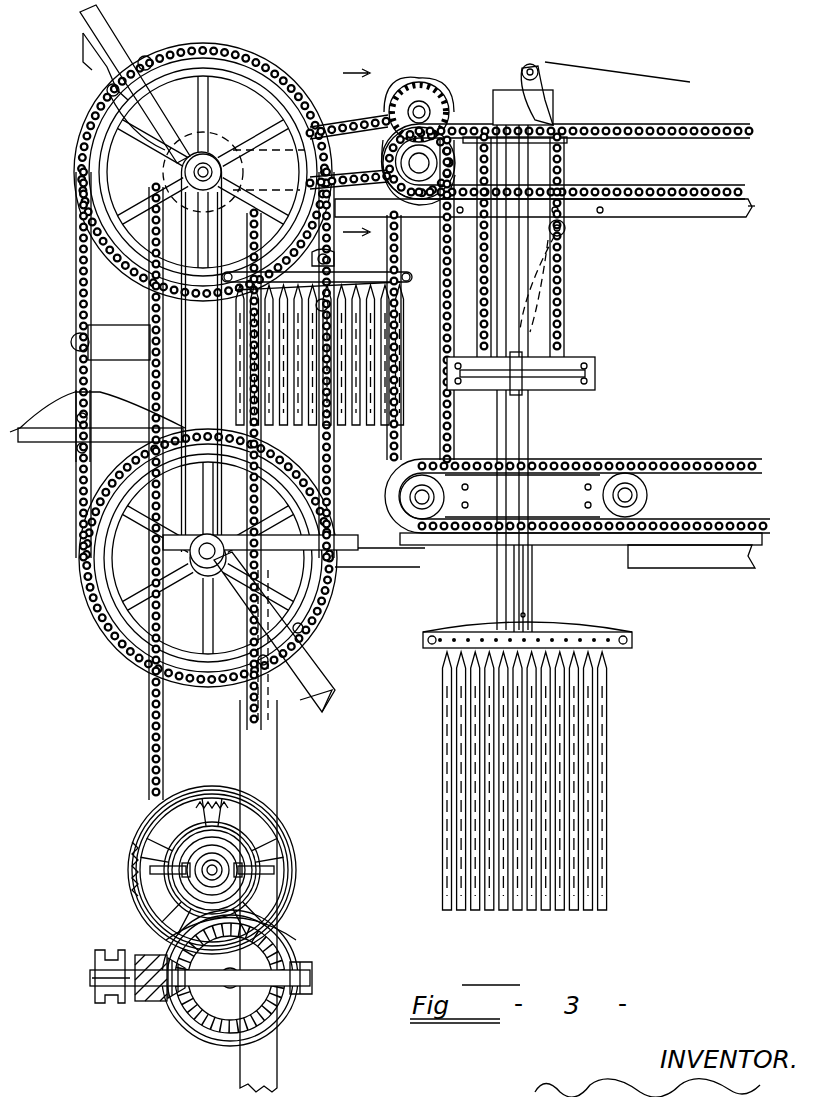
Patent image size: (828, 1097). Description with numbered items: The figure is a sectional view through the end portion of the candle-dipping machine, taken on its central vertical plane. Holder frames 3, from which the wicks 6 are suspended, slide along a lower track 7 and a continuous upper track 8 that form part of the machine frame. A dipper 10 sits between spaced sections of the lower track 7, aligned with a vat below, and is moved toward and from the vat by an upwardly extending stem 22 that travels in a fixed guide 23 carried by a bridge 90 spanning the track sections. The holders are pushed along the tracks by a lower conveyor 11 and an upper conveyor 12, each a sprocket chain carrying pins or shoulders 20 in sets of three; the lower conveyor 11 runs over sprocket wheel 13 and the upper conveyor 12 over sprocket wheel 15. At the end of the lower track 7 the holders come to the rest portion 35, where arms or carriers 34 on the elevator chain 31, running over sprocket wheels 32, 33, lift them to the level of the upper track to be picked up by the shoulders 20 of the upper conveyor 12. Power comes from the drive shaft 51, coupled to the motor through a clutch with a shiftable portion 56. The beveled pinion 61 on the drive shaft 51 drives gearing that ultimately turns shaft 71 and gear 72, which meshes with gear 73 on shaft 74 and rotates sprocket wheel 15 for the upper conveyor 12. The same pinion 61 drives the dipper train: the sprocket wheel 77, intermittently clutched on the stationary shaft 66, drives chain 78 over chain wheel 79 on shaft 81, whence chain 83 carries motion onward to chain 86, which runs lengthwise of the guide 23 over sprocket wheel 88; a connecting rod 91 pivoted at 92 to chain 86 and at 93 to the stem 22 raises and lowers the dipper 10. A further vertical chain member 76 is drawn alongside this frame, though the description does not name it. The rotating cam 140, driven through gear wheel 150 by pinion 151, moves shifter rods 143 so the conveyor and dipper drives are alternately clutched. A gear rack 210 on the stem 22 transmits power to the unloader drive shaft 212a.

The frames which support the wick trays 3 is at (575, 632).
The wicks 6 is at (382, 430).
The lower track 7 is at (732, 546).
The upper track 8 is at (672, 204).
The dipper 10 is at (468, 632).
The lower conveyor 11 is at (668, 470).
The upper conveyor 12 is at (605, 198).
The sprocket wheel 13 is at (460, 498).
The sprocket wheel 15 is at (478, 96).
The pins or shoulders 20 is at (716, 132).
The bar or stem 22 is at (528, 594).
The guide 23 is at (528, 430).
The elevator sprocket chain 31 is at (78, 302).
The sprocket wheel 32 is at (100, 522).
The sprocket wheel 33 is at (108, 234).
The arms or carriers 34 is at (102, 48).
The rest portion 35 is at (348, 550).
The drive shaft 51 is at (146, 966).
The shiftable portion 56 is at (96, 1004).
The beveled pinion 61 is at (170, 1010).
The stationary shaft 66 is at (205, 866).
The shaft 71 is at (400, 108).
The gear 72 is at (419, 86).
The gear 73 is at (286, 958).
The shaft 74 is at (400, 163).
The chain 76 is at (440, 440).
The sprocket wheel 77 is at (205, 806).
The belt or chain 78 is at (145, 730).
The chain wheel 79 is at (244, 172).
The shaft 81 is at (208, 165).
The belt or chain 83 is at (328, 128).
The chain 86 is at (566, 290).
The sprocket wheel 88 is at (566, 320).
The bridge 90 is at (478, 482).
The connecting rod 91 is at (566, 264).
The pivot 92 is at (565, 230).
The pivot 93 is at (498, 325).
The rotating cam 140 is at (242, 852).
The shifter rods 143 is at (185, 878).
The gear wheel 150 is at (186, 872).
The pinion 151 is at (306, 922).
The gear rack 210 is at (513, 594).
The shaft 212a is at (570, 548).